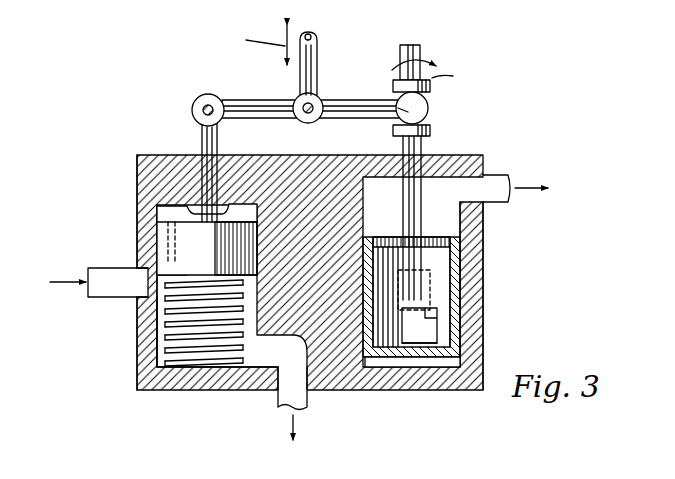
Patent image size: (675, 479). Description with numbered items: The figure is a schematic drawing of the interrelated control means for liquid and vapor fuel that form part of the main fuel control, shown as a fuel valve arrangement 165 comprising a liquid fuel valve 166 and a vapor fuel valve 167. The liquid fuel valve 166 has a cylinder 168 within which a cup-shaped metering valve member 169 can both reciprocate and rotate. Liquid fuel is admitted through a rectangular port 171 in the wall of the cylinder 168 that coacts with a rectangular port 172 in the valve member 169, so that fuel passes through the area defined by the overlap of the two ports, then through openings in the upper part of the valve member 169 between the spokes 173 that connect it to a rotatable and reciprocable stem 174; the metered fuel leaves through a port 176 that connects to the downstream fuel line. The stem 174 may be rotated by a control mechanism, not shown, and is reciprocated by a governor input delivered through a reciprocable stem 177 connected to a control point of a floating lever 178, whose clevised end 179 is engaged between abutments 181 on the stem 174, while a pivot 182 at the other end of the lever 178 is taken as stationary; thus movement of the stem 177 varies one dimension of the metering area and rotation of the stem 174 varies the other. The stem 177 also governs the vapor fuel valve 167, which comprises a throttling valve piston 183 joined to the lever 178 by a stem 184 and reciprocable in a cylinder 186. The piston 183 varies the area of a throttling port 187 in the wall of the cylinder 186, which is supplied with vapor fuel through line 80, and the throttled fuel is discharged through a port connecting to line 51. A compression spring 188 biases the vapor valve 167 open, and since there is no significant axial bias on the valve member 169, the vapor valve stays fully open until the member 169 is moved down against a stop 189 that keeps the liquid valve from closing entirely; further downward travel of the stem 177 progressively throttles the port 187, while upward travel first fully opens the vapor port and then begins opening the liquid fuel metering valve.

The line 51 is at (300, 392).
The line 80 is at (95, 290).
The fuel valve arrangement 165 is at (362, 392).
The liquid fuel valve 166 is at (487, 270).
The vapor fuel valve 167 is at (135, 325).
The cylinder 168 is at (476, 212).
The cup-shaped metering valve member 169 is at (456, 262).
The rectangular port 171 is at (425, 322).
The rectangular port 172 is at (440, 332).
The spokes 173 is at (390, 235).
The stem 174 is at (422, 140).
The port 176 is at (495, 185).
The reciprocable stem 177 is at (315, 60).
The floating lever 178 is at (283, 105).
The clevised end 179 is at (402, 112).
The abutments 181 is at (432, 100).
The pivot 182 is at (205, 102).
The throttling valve piston 183 is at (165, 238).
The stem 184 is at (205, 140).
The cylinder 186 is at (158, 344).
The throttling port 187 is at (152, 265).
The compression spring 188 is at (175, 365).
The stop 189 is at (400, 362).